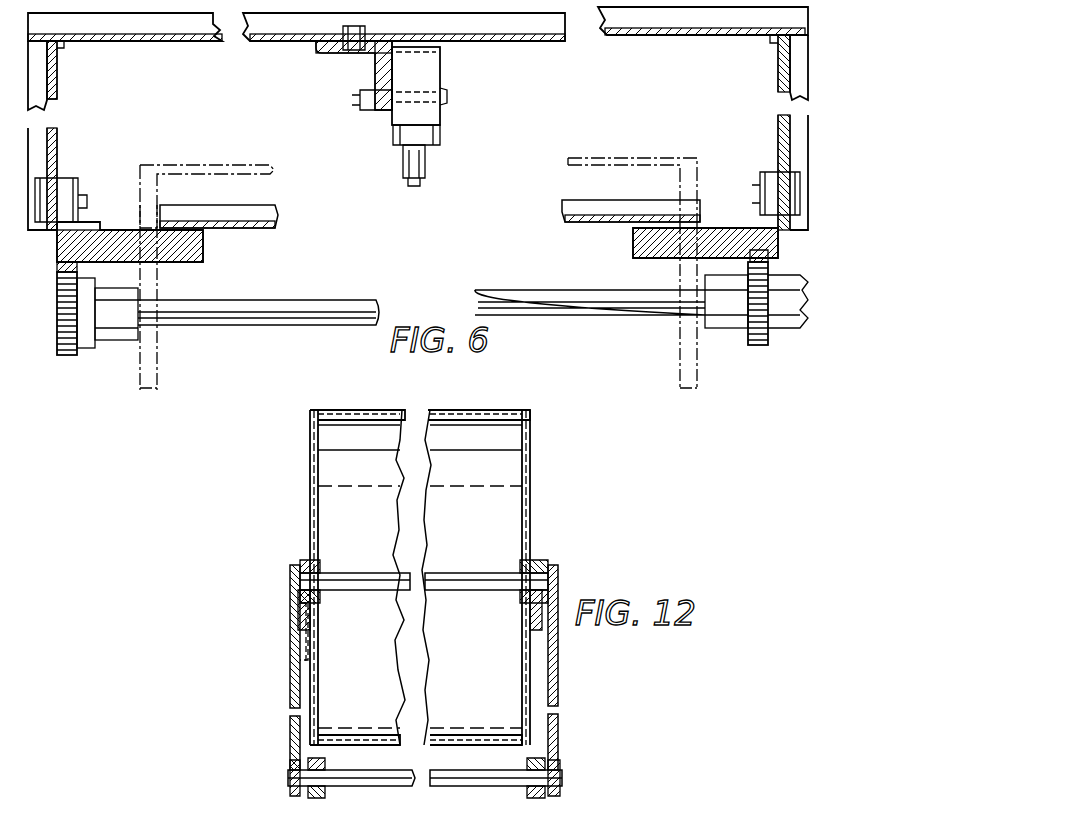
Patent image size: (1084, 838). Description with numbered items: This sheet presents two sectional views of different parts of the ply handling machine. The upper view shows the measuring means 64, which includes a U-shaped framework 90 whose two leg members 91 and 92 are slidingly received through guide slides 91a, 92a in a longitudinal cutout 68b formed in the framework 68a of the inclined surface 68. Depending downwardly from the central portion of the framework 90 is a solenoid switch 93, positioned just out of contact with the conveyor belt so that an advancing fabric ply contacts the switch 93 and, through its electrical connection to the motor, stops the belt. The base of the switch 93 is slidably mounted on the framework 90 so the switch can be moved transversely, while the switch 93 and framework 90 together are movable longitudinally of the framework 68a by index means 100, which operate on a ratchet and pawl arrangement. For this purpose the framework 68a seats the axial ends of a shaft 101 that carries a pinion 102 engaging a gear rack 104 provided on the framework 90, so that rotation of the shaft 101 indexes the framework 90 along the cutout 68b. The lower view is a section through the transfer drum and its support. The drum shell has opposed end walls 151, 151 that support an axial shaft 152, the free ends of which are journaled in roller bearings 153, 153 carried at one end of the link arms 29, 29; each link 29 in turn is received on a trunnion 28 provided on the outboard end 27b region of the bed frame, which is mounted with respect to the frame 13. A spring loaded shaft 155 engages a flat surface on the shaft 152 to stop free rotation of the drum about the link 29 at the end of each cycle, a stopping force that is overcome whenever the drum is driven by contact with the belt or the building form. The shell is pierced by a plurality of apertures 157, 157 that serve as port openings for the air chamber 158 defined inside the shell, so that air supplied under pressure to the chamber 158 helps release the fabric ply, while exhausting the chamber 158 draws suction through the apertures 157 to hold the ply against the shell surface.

In FIG. 6, the measuring means 64 is at (541, 40).
In FIG. 6, the U-shaped framework 90 is at (727, 48).
In FIG. 6, the solenoid switch 93 is at (452, 113).
In FIG. 6, the leg member 92 is at (60, 142).
In FIG. 6, the leg member 91 is at (776, 136).
In FIG. 6, the guide slide 92a is at (118, 210).
In FIG. 6, the guide slide 91a is at (717, 212).
In FIG. 6, the inclined surface 68 is at (677, 146).
In FIG. 6, the framework 68a is at (160, 382).
In FIG. 6, the longitudinal cutout 68b is at (178, 265).
In FIG. 6, the gear rack 104 is at (62, 268).
In FIG. 6, the pinion 102 is at (68, 356).
In FIG. 6, the shaft 101 is at (500, 298).
In FIG. 6, the index means 100 is at (780, 356).
In FIG. 12, the end wall 151 is at (310, 473).
In FIG. 12, the aperture 157 is at (364, 410).
In FIG. 12, the axial shaft 152 is at (345, 572).
In FIG. 12, the roller bearing 153 is at (300, 562).
In FIG. 12, the spring loaded shaft 155 is at (292, 608).
In FIG. 12, the link arm 29 is at (290, 702).
In FIG. 12, the frame 13 is at (300, 548).
In FIG. 12, the trunnion 28 is at (315, 792).
In FIG. 12, the air chamber 158 is at (505, 675).
In FIG. 12, the frame member 27b is at (670, 837).